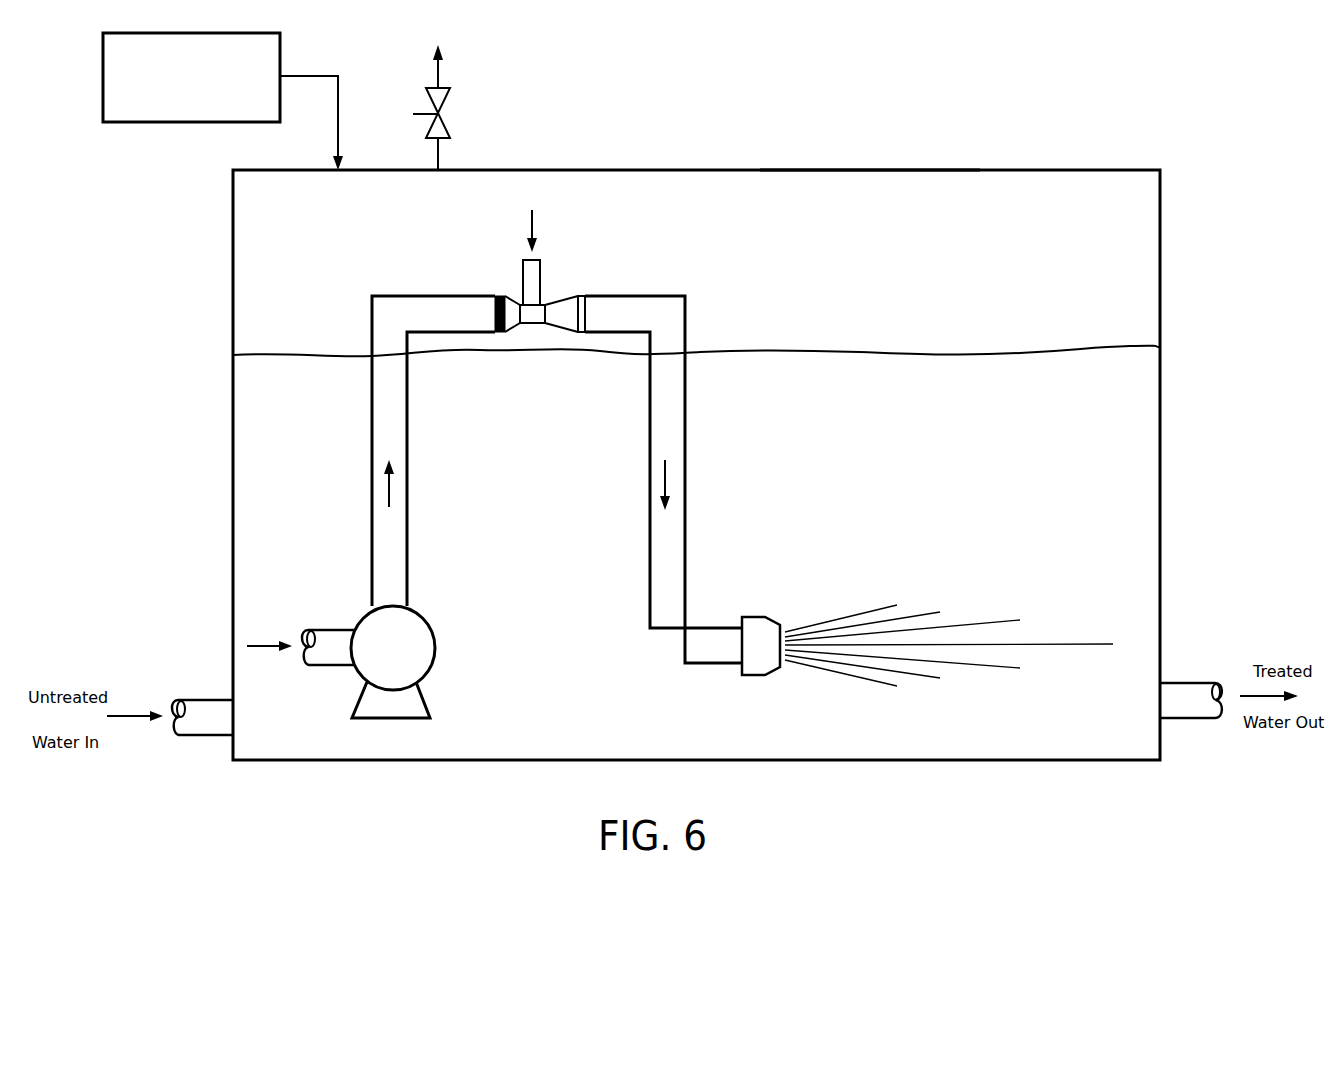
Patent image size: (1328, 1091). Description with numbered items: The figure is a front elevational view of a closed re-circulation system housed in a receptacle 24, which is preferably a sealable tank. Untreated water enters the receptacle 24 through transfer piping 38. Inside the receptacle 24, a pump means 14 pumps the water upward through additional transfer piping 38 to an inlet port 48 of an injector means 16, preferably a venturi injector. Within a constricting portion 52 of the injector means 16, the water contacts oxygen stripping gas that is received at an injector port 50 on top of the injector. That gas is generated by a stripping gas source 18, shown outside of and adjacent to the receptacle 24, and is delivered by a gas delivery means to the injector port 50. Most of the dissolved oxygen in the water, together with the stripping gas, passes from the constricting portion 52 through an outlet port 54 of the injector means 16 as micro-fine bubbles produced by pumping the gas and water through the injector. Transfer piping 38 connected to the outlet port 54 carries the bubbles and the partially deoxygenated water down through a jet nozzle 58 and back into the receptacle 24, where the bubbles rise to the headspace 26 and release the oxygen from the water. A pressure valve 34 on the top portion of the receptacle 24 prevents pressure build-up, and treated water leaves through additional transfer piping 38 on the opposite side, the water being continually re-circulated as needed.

The pump means 14 is at (428, 650).
The injector means 16 is at (540, 289).
The stripping gas source 18 is at (275, 62).
The receptacle 24 is at (1145, 433).
The headspace 26 is at (828, 187).
The pressure valve 34 is at (448, 105).
The transfer piping 38 is at (407, 522).
The inlet port 48 is at (500, 333).
The injector port 50 is at (533, 260).
The constricting portion 52 is at (527, 325).
The outlet port 54 is at (582, 333).
The jet nozzle 58 is at (768, 668).